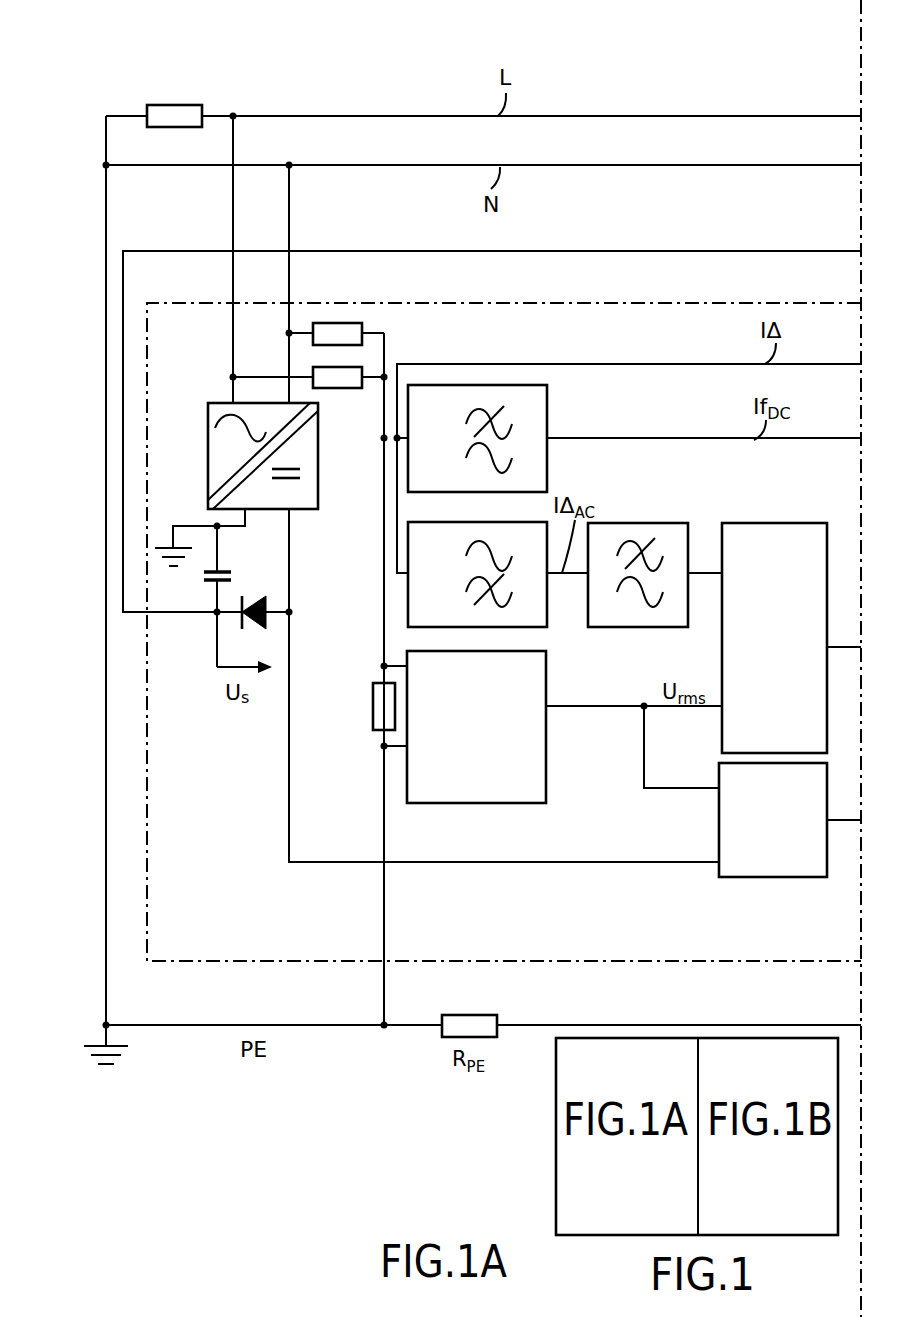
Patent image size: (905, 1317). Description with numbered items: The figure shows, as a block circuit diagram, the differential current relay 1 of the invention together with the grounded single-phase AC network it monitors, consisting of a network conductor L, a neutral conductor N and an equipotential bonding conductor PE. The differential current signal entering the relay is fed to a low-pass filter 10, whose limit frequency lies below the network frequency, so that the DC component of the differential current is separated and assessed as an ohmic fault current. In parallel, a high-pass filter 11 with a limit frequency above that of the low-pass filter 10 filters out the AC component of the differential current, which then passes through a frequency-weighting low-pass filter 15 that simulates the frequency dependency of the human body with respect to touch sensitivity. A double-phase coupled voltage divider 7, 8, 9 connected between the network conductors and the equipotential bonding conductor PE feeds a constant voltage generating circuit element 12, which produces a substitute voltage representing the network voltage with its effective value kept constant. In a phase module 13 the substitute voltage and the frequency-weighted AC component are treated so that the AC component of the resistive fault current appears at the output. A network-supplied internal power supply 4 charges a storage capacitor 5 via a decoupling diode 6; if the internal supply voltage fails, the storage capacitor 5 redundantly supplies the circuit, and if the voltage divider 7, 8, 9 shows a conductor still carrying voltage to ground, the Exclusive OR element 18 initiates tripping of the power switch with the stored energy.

The differential current relay 1 is at (146, 906).
The internal power supply 4 is at (208, 450).
The storage capacitor 5 is at (213, 584).
The decoupling diode 6 is at (266, 600).
The voltage divider resistor 7 is at (340, 389).
The voltage divider resistor 8 is at (372, 333).
The voltage divider resistor 9 is at (373, 703).
The low-pass filter 10 is at (547, 397).
The high-pass filter 11 is at (547, 597).
The constant voltage generating circuit element 12 is at (468, 803).
The phase module 13 is at (800, 523).
The frequency-weighting low-pass filter 15 is at (608, 523).
The Exclusive OR element 18 is at (737, 877).